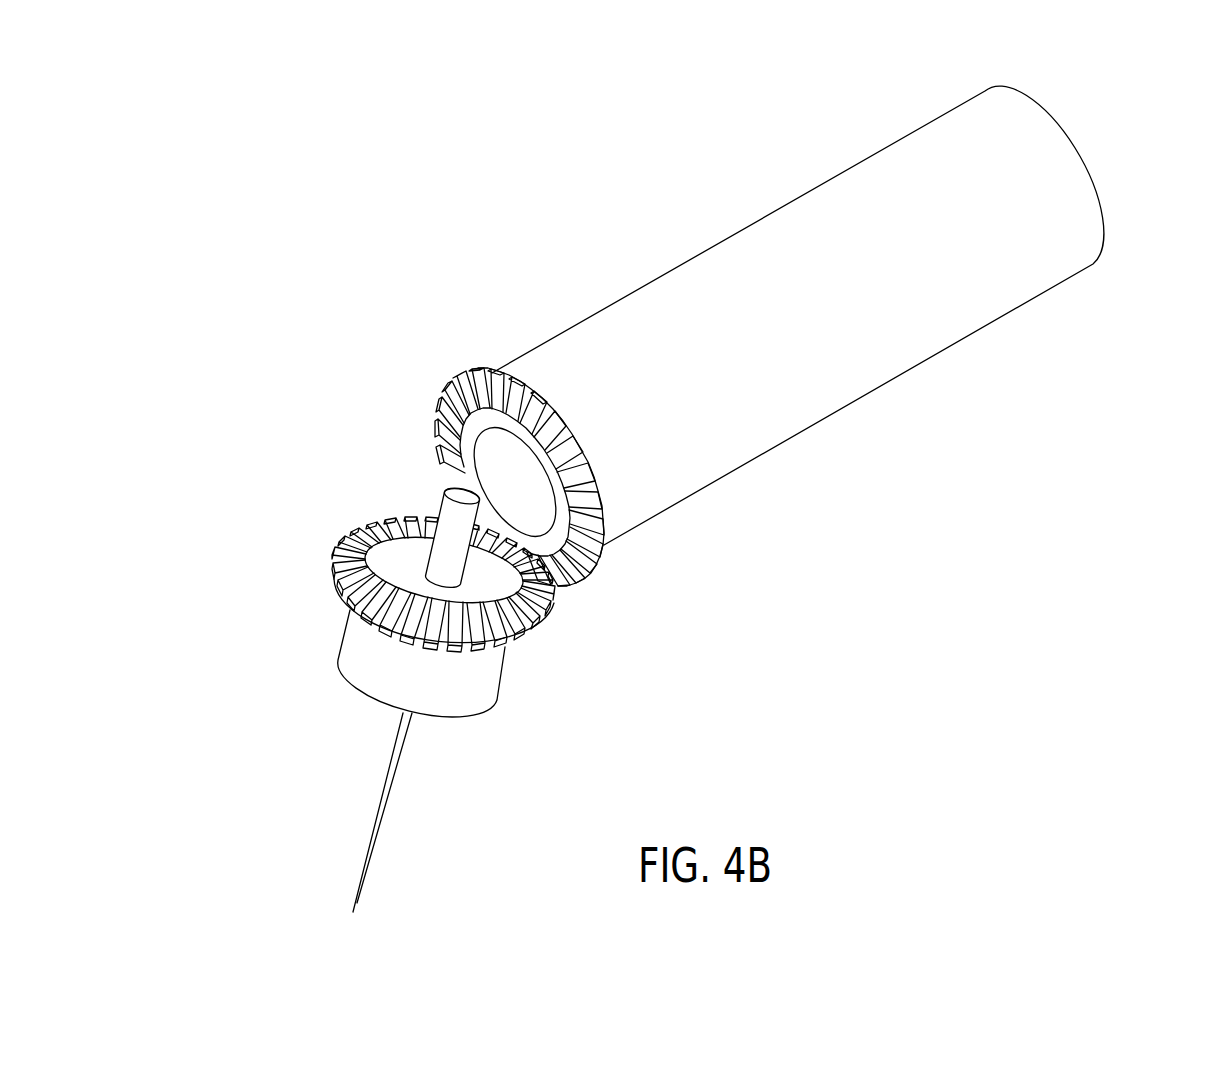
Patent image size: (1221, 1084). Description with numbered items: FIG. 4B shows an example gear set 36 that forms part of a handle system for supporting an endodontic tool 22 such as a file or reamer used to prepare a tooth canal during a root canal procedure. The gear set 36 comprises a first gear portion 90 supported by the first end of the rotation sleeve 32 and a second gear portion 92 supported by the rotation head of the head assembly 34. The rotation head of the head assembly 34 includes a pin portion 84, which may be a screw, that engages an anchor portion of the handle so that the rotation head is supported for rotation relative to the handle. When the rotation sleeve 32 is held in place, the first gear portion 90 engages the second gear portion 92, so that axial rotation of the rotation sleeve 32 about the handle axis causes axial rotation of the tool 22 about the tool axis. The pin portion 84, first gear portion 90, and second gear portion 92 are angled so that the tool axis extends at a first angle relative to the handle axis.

The endodontic tool 22 is at (386, 805).
The rotation sleeve 32 is at (716, 244).
The head assembly 34 is at (366, 761).
The gear set 36 is at (449, 513).
The pin portion 84 is at (447, 522).
The first gear portion 90 is at (445, 392).
The second gear portion 92 is at (330, 547).